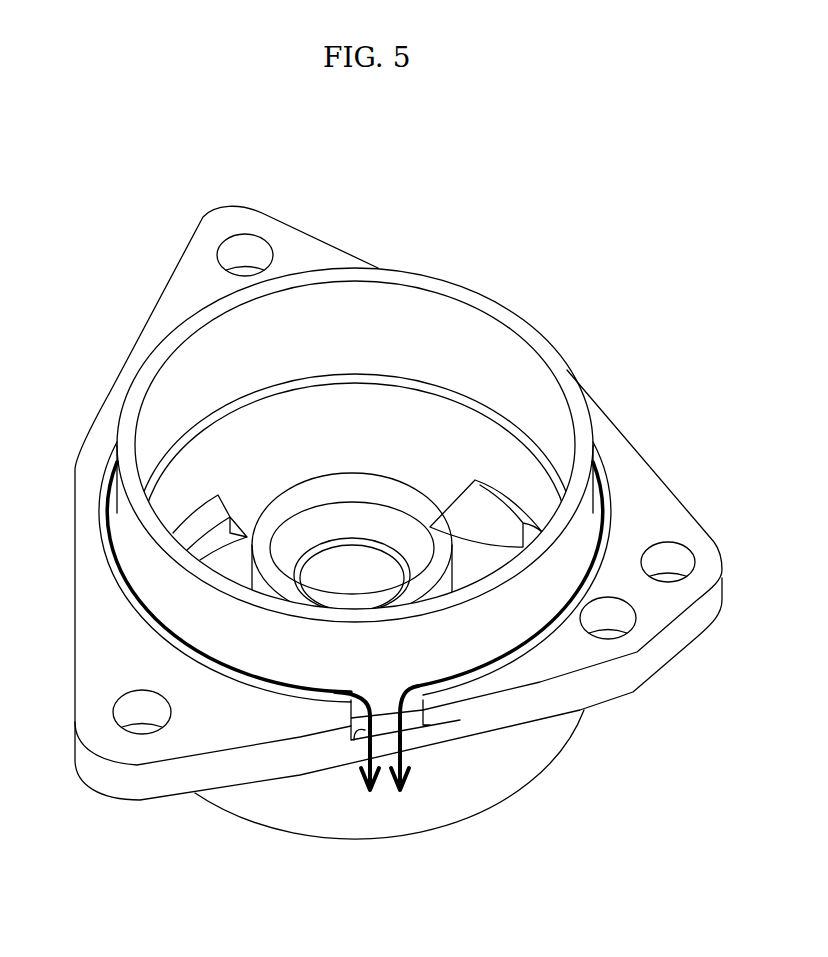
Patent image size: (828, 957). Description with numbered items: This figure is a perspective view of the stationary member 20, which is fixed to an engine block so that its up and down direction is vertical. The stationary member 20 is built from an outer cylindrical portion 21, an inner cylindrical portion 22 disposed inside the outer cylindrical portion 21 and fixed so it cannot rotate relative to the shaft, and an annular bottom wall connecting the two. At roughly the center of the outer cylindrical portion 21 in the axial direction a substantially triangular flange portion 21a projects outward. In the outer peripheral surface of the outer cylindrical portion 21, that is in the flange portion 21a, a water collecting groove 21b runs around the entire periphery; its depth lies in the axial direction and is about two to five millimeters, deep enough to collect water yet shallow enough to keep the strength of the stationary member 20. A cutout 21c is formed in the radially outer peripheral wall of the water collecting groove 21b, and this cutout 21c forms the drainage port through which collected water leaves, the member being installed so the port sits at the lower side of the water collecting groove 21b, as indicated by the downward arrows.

The stationary member 20 is at (129, 182).
The outer cylindrical portion 21 is at (402, 307).
The flange portion 21a is at (297, 243).
The water collecting groove 21b is at (101, 519).
The cutout 21c is at (353, 740).
The inner cylindrical portion 22 is at (385, 527).